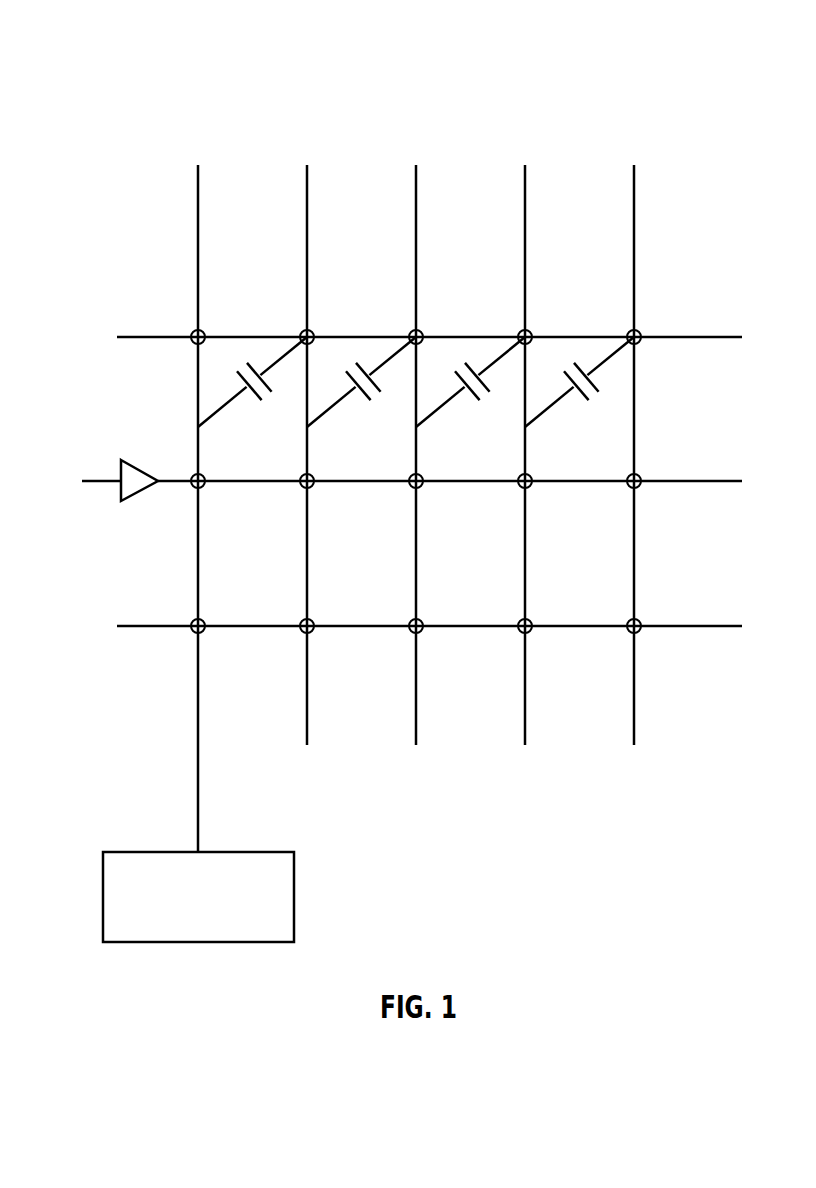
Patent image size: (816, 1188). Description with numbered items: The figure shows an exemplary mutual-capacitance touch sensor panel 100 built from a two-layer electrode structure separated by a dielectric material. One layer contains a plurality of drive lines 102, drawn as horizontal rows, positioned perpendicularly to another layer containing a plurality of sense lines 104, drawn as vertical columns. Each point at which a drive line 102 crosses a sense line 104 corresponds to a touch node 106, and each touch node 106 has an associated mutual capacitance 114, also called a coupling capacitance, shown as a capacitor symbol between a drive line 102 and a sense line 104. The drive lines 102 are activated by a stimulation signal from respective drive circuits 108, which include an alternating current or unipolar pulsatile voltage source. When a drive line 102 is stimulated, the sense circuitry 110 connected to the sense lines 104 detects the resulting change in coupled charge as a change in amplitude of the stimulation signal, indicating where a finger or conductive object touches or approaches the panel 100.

The mutual-capacitance touch sensor panel 100 is at (677, 57).
The drive lines 102 is at (137, 334).
The sense lines 104 is at (198, 199).
The touch nodes 106 is at (204, 331).
The drive circuits 108 is at (140, 489).
The sense circuitry 110 is at (277, 849).
The mutual capacitance 114 is at (218, 409).